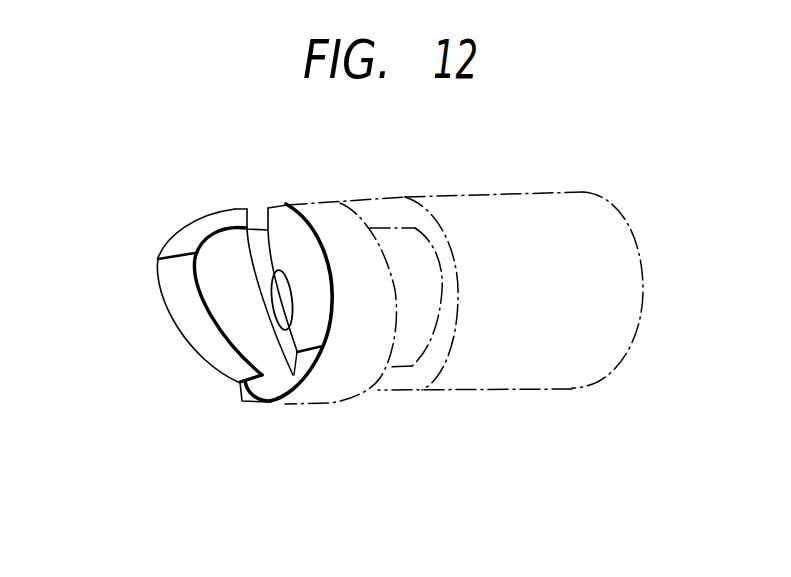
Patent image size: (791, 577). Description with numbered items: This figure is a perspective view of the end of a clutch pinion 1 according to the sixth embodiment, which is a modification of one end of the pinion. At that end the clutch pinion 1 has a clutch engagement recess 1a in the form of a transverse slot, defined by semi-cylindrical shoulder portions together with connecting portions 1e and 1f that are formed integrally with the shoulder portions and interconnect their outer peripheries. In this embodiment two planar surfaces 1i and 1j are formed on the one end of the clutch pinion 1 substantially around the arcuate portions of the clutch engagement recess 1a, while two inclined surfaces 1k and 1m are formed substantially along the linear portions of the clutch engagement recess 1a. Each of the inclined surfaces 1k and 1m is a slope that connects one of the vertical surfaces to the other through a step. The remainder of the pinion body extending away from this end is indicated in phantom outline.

The clutch pinion 1 is at (199, 394).
The clutch engagement recess 1a is at (220, 282).
The connecting portion 1e is at (231, 214).
The connecting portion 1f is at (258, 398).
The planar surface 1i is at (198, 223).
The planar surface 1j is at (296, 380).
The inclined surface 1k is at (198, 333).
The inclined surface 1m is at (300, 257).